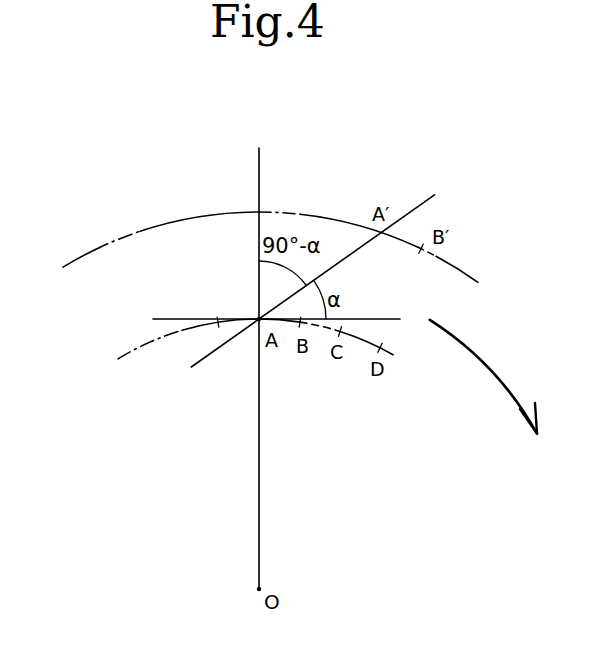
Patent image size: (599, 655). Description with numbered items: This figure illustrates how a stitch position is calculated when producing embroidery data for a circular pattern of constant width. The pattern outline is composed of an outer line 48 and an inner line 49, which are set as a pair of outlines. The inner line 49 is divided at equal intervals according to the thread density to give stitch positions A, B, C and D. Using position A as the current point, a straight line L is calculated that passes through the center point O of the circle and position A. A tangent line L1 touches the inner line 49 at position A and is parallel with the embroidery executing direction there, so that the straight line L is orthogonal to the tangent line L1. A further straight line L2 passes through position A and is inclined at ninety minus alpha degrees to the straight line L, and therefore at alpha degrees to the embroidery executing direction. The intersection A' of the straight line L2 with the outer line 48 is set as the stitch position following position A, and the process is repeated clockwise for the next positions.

The outer line 48 is at (93, 247).
The inner line 49 is at (118, 360).
The straight line L is at (260, 483).
The tangent line L1 is at (170, 317).
The straight line L2 is at (428, 197).